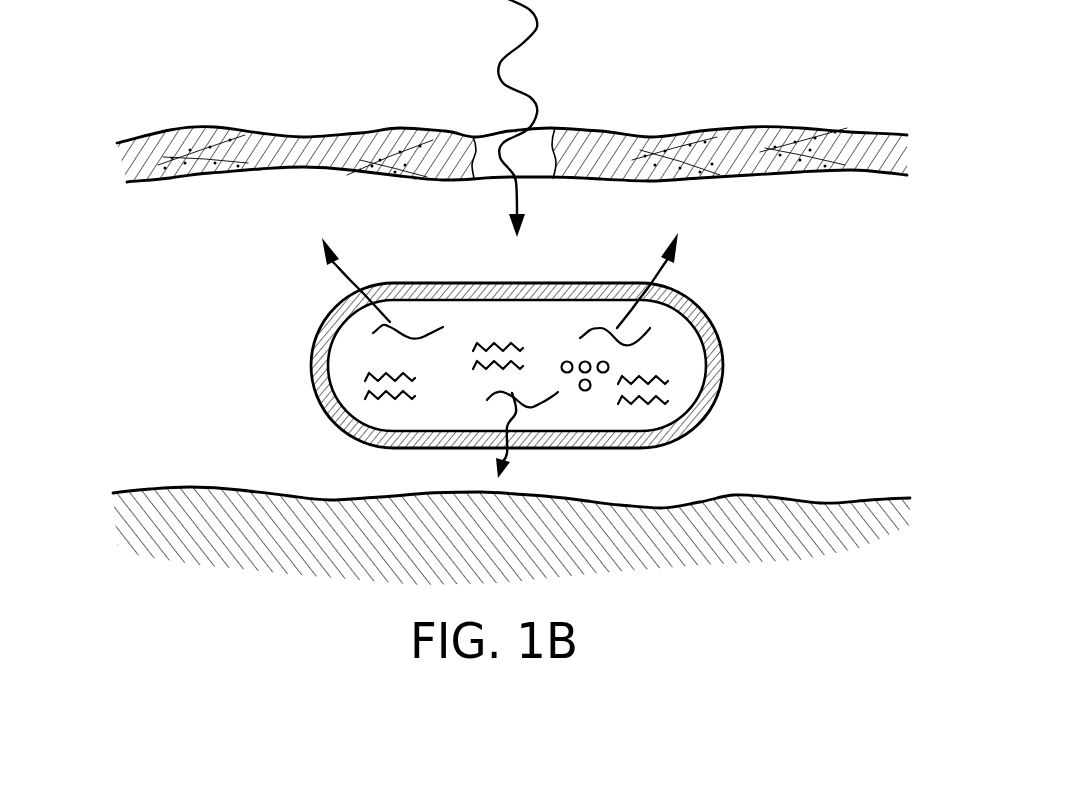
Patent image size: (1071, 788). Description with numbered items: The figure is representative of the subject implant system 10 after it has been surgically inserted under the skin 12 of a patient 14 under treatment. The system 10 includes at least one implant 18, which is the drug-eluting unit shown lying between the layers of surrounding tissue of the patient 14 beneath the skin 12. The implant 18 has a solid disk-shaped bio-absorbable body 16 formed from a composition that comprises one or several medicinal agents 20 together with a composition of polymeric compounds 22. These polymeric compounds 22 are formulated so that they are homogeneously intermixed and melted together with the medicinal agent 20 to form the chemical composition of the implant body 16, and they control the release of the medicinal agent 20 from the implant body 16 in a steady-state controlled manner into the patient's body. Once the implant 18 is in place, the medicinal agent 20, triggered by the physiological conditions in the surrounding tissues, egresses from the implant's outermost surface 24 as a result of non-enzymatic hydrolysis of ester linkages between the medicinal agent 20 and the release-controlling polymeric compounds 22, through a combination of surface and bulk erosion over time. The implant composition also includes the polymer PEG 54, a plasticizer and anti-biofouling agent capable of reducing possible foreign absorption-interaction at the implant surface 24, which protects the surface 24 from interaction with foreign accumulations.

The implant system 10 is at (460, 352).
The skin 12 is at (303, 137).
The patient 14 is at (865, 499).
The bio-absorbable body 16 is at (693, 301).
The implant 18 is at (772, 367).
The medicinal agent 20 is at (427, 337).
The polymeric compounds 22 is at (667, 397).
The outermost surface 24 is at (291, 370).
The PEG 54 is at (587, 391).